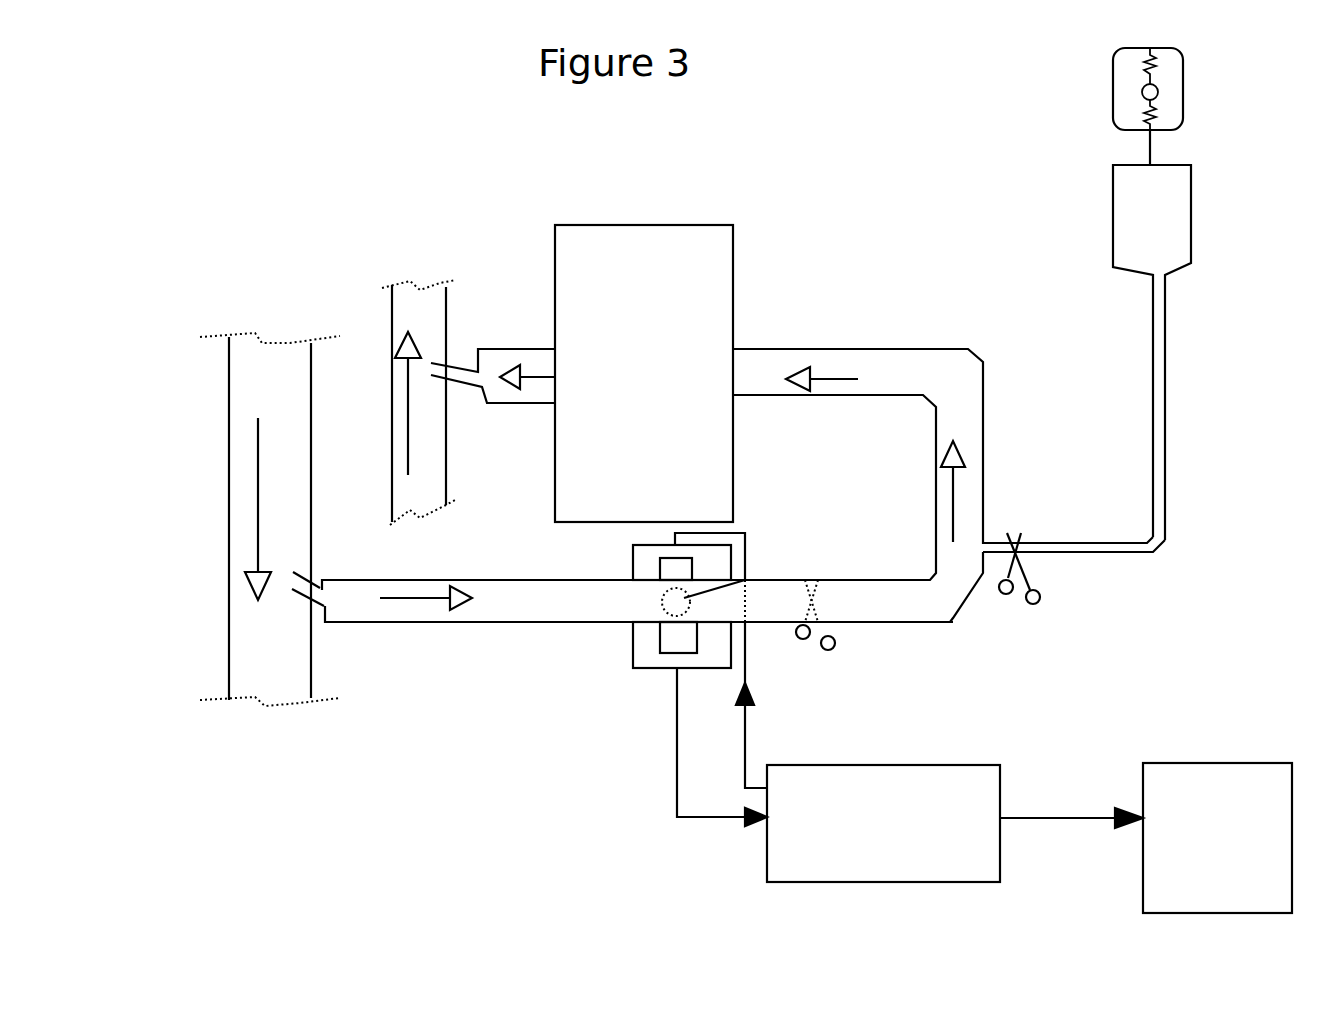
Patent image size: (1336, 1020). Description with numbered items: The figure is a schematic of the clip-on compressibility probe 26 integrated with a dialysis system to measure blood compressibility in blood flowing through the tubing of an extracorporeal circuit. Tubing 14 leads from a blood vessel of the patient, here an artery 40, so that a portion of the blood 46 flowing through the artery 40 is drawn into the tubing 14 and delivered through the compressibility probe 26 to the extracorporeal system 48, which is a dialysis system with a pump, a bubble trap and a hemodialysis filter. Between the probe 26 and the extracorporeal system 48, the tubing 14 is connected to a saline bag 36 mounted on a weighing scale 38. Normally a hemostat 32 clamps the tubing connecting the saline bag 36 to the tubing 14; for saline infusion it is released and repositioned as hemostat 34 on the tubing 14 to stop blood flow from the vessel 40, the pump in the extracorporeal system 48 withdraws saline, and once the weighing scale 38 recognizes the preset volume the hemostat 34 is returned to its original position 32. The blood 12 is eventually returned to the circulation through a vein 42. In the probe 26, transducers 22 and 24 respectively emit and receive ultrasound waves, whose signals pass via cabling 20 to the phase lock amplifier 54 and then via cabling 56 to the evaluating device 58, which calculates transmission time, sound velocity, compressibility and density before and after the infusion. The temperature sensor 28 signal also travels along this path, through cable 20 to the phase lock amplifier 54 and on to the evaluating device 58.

The blood 12 is at (503, 375).
The tubing 14 is at (505, 625).
The cabling 20 is at (677, 817).
The transducer 22 is at (675, 567).
The transducer 24 is at (665, 640).
The clip-on compressibility probe 26 is at (633, 668).
The temperature sensor 28 is at (745, 580).
The hemostat 32 is at (1040, 603).
The hemostat 34 is at (835, 650).
The saline bag 36 is at (1152, 335).
The weighing scale 38 is at (1113, 78).
The artery 40 is at (277, 400).
The vein 42 is at (402, 298).
The blood 46 is at (258, 548).
The extracorporeal system 48 is at (644, 373).
The phase lock amplifier 54 is at (868, 752).
The cabling 56 is at (1055, 815).
The evaluating device 58 is at (1217, 838).